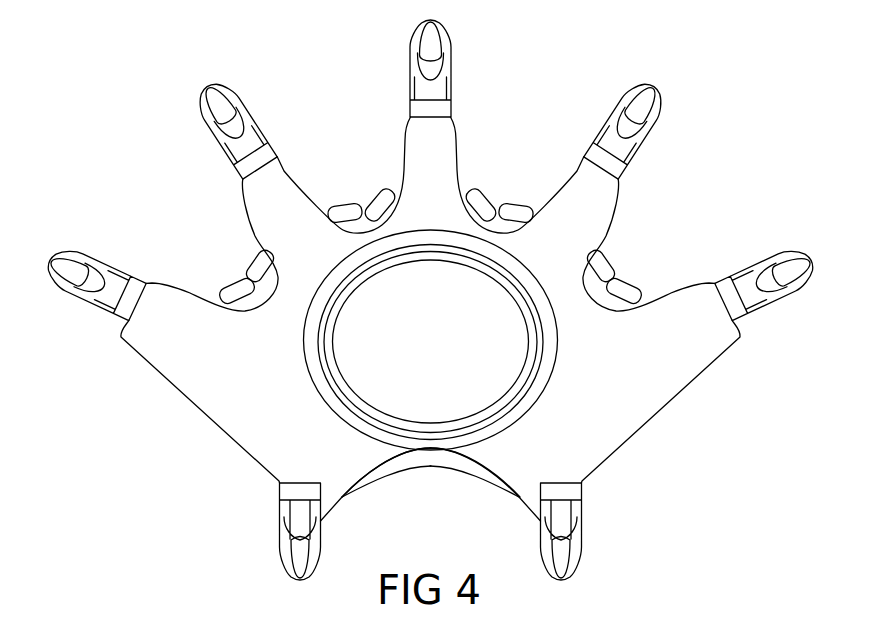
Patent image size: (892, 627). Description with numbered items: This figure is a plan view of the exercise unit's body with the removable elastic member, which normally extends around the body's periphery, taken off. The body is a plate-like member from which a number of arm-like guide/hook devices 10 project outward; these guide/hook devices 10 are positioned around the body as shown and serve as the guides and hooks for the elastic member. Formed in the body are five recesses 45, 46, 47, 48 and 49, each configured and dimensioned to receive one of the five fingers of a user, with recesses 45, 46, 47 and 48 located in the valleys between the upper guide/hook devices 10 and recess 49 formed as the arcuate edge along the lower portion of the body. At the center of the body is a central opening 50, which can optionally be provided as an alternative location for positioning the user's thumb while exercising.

The guide/hook device 10 is at (649, 91).
The recess 45 is at (243, 281).
The recess 46 is at (358, 204).
The recess 47 is at (503, 204).
The recess 48 is at (618, 281).
The recess 49 is at (433, 460).
The central opening 50 is at (353, 369).